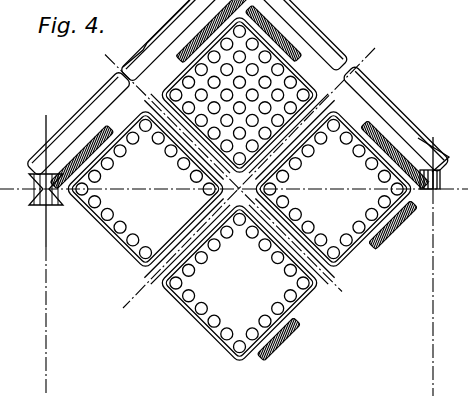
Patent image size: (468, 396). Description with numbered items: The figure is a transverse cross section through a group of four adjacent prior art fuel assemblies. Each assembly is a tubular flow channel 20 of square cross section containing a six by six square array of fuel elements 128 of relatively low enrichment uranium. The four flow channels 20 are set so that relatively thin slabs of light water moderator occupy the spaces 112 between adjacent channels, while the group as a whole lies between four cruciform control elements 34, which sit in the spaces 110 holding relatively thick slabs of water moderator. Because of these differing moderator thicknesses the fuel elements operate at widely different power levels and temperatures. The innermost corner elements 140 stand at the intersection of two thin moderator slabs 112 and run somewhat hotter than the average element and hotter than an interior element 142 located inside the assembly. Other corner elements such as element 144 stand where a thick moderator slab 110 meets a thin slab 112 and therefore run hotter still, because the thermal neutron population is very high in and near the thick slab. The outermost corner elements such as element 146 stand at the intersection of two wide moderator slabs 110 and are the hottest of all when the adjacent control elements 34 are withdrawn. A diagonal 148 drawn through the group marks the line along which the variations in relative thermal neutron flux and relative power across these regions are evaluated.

The flow channel 20 is at (300, 72).
The cruciform control element 34 is at (80, 147).
The moderator slab space 110 is at (115, 113).
The moderator slab space 112 is at (272, 208).
The fuel element 128 is at (392, 162).
The innermost corner fuel element 140 is at (240, 152).
The interior fuel element 142 is at (242, 88).
The corner fuel element 144 is at (334, 270).
The outermost corner fuel element 146 is at (71, 207).
The diagonal 148 is at (14, 192).